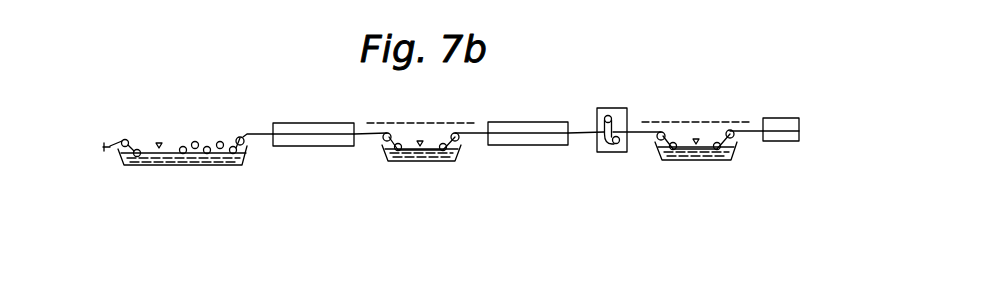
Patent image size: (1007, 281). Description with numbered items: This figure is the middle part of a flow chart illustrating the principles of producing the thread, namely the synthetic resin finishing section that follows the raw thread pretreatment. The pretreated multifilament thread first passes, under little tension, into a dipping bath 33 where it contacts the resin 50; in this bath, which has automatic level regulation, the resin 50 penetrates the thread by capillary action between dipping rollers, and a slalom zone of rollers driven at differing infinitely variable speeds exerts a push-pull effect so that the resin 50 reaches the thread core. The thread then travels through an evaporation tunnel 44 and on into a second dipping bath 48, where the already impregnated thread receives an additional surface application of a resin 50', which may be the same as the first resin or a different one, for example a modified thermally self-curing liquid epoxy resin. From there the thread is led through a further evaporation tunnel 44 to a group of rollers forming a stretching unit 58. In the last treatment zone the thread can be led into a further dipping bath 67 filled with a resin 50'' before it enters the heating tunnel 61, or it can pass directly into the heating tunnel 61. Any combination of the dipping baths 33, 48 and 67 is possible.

The dipping bath 33 is at (155, 168).
The resin 50 is at (183, 205).
The evaporation tunnel 44 is at (532, 138).
The dipping bath 48 is at (398, 168).
The resin 50' is at (424, 202).
The stretching unit 58 is at (608, 152).
The dipping bath 67 is at (676, 163).
The resin 50'' is at (704, 198).
The heating tunnel 61 is at (787, 141).